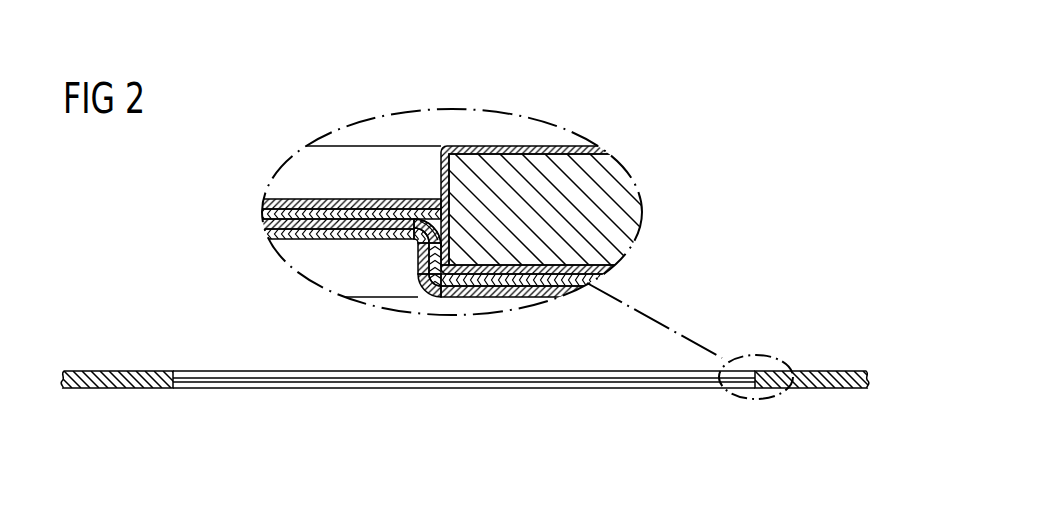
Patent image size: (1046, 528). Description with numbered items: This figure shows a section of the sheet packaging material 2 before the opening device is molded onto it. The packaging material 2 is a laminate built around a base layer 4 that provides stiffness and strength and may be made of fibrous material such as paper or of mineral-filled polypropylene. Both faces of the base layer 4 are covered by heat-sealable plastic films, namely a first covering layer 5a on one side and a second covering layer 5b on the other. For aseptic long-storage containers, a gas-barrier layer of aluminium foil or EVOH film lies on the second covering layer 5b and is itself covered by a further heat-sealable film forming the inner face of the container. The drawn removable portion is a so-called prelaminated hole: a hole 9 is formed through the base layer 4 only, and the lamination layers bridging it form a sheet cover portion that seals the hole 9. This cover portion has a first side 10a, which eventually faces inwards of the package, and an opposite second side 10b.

The packaging material 2 is at (467, 379).
The base layer 4 is at (640, 192).
The first covering layer 5a is at (492, 146).
The second covering layer 5b is at (600, 268).
The hole 9 is at (433, 200).
The first side of the cover portion 10a is at (346, 389).
The second side of the cover portion 10b is at (334, 368).